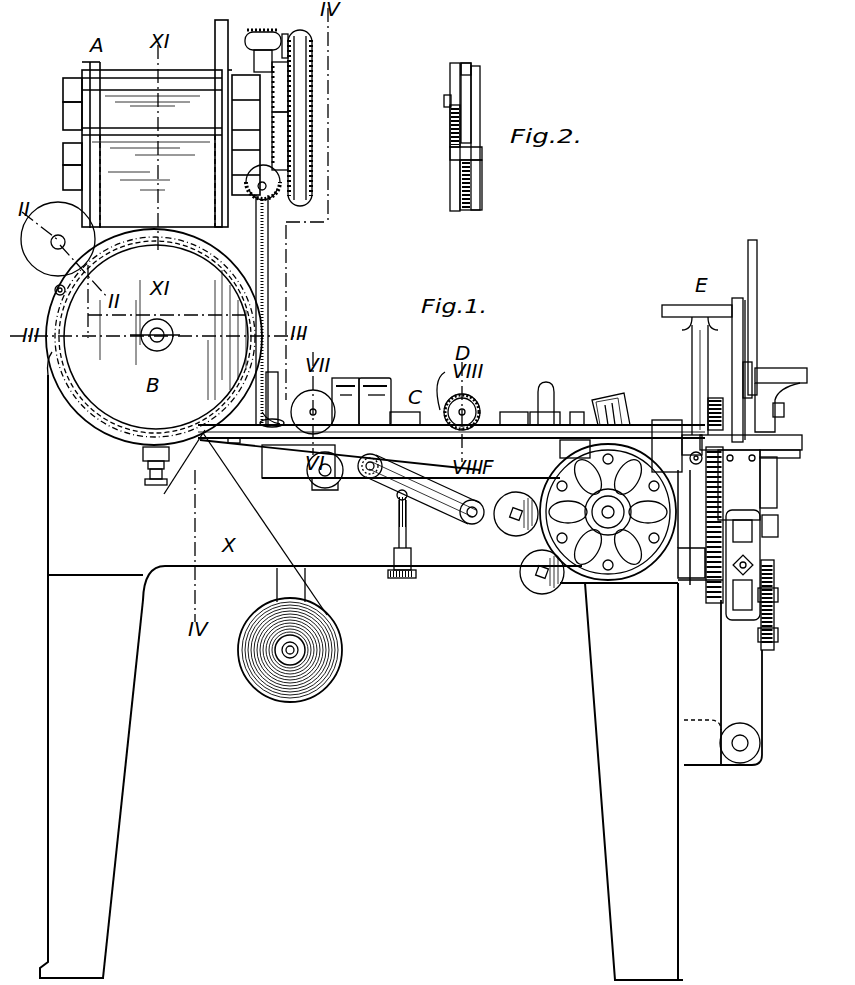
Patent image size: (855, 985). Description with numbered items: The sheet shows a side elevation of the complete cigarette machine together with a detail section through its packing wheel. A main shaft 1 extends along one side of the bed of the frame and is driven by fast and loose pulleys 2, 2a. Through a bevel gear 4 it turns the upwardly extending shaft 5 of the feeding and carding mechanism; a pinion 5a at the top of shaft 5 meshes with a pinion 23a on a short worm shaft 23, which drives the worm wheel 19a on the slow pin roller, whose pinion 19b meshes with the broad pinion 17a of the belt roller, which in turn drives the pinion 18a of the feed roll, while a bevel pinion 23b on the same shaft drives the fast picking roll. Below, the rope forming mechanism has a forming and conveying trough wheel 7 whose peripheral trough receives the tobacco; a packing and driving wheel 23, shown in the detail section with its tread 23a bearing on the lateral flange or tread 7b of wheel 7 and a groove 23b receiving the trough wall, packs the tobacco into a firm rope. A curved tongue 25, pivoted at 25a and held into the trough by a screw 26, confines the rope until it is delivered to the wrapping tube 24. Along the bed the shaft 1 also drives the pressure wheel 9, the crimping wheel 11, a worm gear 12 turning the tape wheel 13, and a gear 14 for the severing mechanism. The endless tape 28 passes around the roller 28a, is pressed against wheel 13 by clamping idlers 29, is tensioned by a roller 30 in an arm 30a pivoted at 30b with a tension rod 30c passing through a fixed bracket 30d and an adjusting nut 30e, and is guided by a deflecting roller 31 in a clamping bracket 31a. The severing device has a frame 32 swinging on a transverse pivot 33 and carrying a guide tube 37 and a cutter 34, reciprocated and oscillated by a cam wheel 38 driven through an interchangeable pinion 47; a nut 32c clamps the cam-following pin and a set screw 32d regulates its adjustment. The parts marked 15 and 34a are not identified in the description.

In FIG. 1, the main shaft 1 is at (496, 424).
In FIG. 1, the fast pulley 2 is at (380, 384).
In FIG. 1, the loose pulley 2a is at (350, 382).
In FIG. 1, the bevel gear 4 is at (262, 414).
In FIG. 1, the upwardly extending shaft 5 is at (270, 270).
In FIG. 1, the pinion 5a is at (274, 32).
In FIG. 1, the forming and conveying trough wheel 7 is at (154, 337).
In FIG. 2, the forming and conveying trough wheel 7 is at (478, 184).
In FIG. 2, the lateral flange or tread 7b is at (450, 150).
In FIG. 1, the pressure wheel 9 is at (316, 408).
In FIG. 1, the crimping wheel 11 is at (470, 418).
In FIG. 1, the worm gear 12 is at (616, 418).
In FIG. 1, the tape wheel 13 is at (576, 582).
In FIG. 1, the gear 14 is at (708, 400).
In FIG. 1, the rod 15 is at (746, 348).
In FIG. 1, the broad pinion 17a is at (268, 207).
In FIG. 1, the pinion 18a is at (312, 80).
In FIG. 1, the worm wheel 19a is at (298, 72).
In FIG. 1, the pinion 19b is at (292, 98).
In FIG. 1, the packing and driving wheel 23 is at (72, 222).
In FIG. 2, the packing and driving wheel 23 is at (473, 90).
In FIG. 1, the tread 23a is at (300, 44).
In FIG. 2, the tread 23a is at (451, 134).
In FIG. 2, the groove 23b is at (464, 66).
In FIG. 1, the wrapping tube 24 is at (233, 440).
In FIG. 1, the tongue 25 is at (82, 420).
In FIG. 1, the pivot 25a is at (54, 293).
In FIG. 1, the screw 26 is at (146, 462).
In FIG. 1, the endless tape 28 is at (262, 450).
In FIG. 1, the roller 28a is at (168, 476).
In FIG. 1, the clamping idlers 29 is at (514, 530).
In FIG. 1, the roller 30 is at (370, 480).
In FIG. 1, the arm 30a is at (430, 498).
In FIG. 1, the pivot 30b is at (466, 522).
In FIG. 1, the tension rod 30c is at (398, 522).
In FIG. 1, the fixed bracket 30d is at (394, 562).
In FIG. 1, the adjusting nut 30e is at (388, 578).
In FIG. 1, the deflecting roller 31 is at (318, 488).
In FIG. 1, the clamping bracket 31a is at (312, 484).
In FIG. 1, the frame 32 is at (748, 694).
In FIG. 1, the nut 32c is at (752, 562).
In FIG. 1, the set screw 32d is at (775, 580).
In FIG. 1, the transverse pivot 33 is at (740, 750).
In FIG. 1, the cutter 34 is at (760, 434).
In FIG. 1, the bracket 34a is at (756, 372).
In FIG. 1, the guide tube 37 is at (702, 438).
In FIG. 1, the cam wheel 38 is at (762, 518).
In FIG. 1, the pinion 47 is at (712, 606).